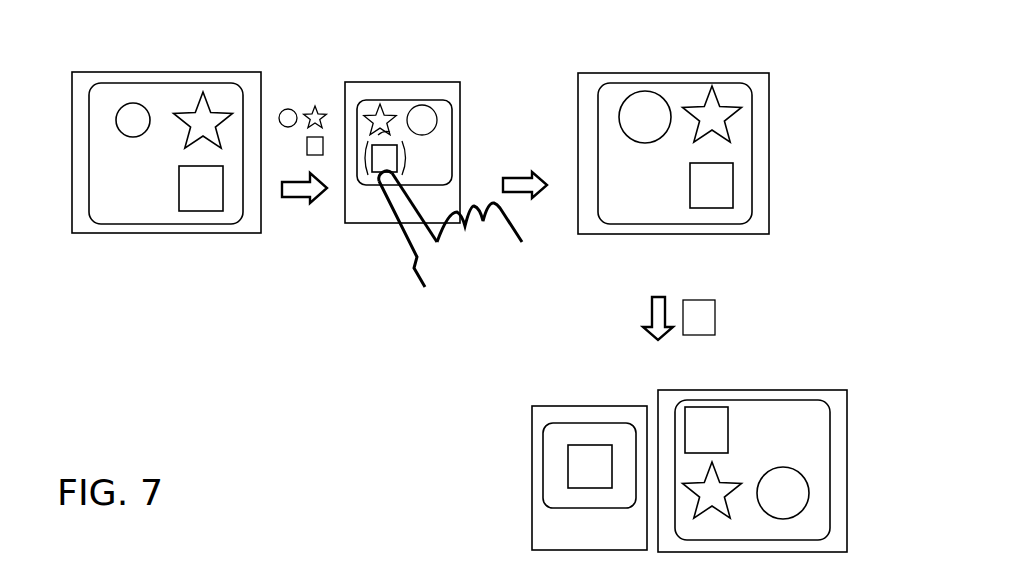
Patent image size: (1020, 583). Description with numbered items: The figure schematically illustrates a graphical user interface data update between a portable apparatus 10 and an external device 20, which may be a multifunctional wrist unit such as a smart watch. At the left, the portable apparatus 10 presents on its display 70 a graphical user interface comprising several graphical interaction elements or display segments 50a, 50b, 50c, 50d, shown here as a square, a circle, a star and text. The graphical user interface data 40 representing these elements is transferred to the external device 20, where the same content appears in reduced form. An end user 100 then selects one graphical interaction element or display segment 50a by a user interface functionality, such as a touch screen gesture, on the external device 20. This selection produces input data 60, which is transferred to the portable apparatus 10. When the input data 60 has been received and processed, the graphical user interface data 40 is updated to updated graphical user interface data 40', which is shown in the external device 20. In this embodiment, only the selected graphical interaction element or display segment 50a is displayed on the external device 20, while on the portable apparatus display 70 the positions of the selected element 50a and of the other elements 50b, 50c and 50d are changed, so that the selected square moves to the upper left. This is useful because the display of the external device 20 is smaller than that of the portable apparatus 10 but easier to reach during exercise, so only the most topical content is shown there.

The portable apparatus 10 is at (178, 250).
The external device 20 is at (428, 70).
The graphical user interface data 40 is at (337, 112).
The updated graphical user interface data 40' is at (733, 290).
The graphical interaction element 50a is at (209, 191).
The graphical interaction element 50b is at (125, 115).
The graphical interaction element 50c is at (202, 112).
The graphical interaction element 50d is at (122, 189).
The input data 60 is at (495, 125).
The portable apparatus display 70 is at (115, 215).
The end user 100 is at (465, 273).